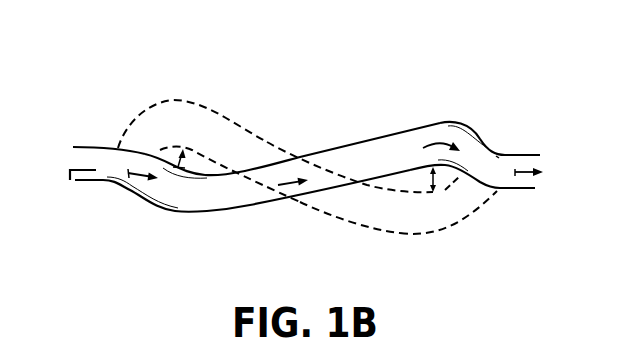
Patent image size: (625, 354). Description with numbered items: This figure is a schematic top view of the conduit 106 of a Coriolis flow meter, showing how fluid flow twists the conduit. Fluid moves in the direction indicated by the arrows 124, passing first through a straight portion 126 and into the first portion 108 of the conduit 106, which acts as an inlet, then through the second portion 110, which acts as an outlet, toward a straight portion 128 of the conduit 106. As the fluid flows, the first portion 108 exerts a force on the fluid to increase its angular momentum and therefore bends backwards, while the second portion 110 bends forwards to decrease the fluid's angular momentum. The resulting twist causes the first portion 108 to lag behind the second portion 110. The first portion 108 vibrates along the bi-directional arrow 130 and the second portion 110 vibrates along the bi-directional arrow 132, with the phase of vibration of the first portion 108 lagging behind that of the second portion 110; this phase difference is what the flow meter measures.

The conduit 106 is at (395, 131).
The first portion 108 is at (162, 193).
The second portion 110 is at (462, 123).
The arrows 124 is at (523, 232).
The straight portion 126 is at (88, 150).
The straight portion 128 is at (525, 157).
The bi-directional arrow 130 is at (174, 160).
The bi-directional arrow 132 is at (446, 192).